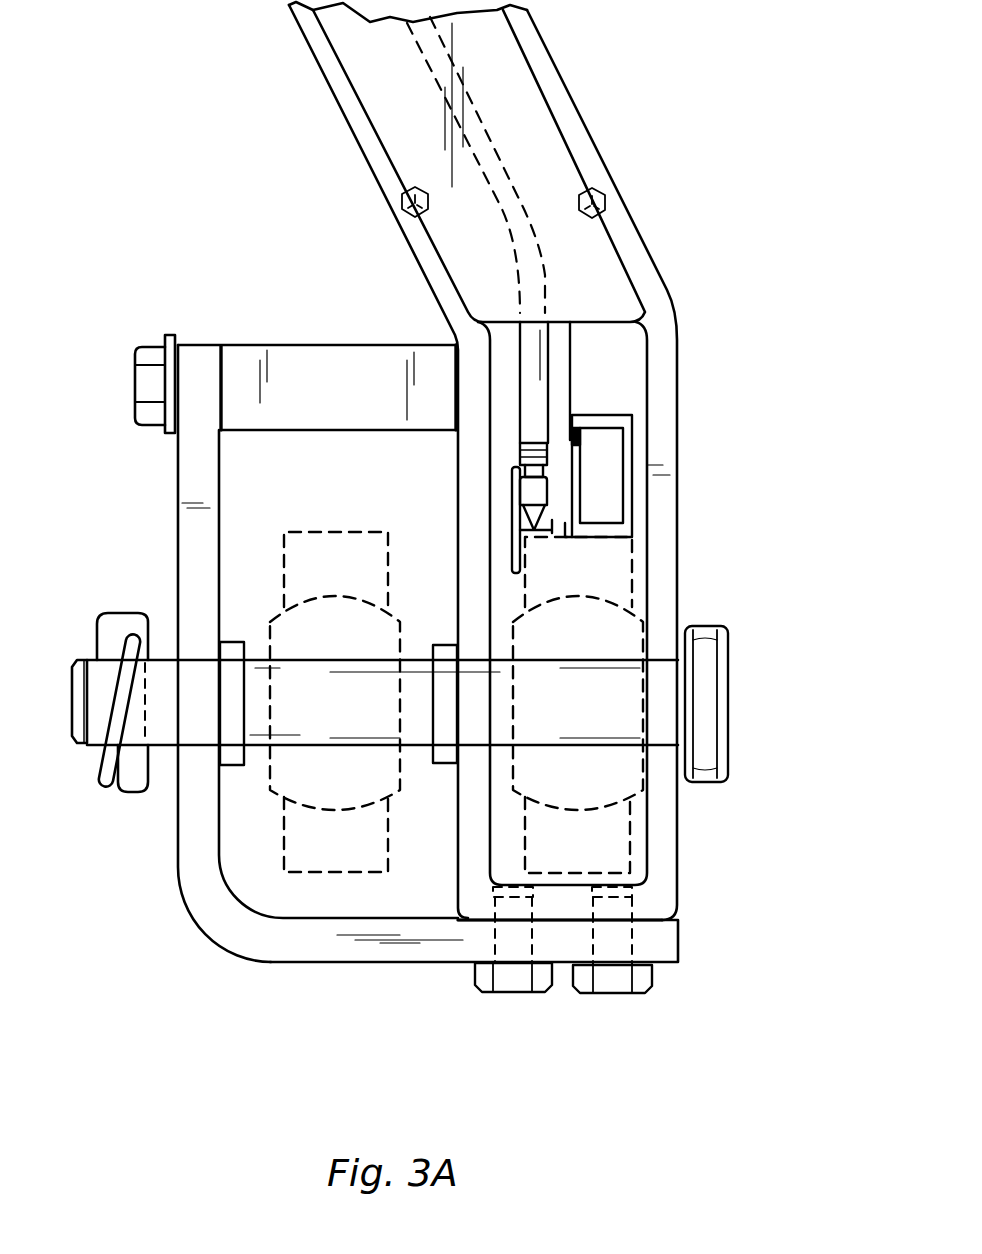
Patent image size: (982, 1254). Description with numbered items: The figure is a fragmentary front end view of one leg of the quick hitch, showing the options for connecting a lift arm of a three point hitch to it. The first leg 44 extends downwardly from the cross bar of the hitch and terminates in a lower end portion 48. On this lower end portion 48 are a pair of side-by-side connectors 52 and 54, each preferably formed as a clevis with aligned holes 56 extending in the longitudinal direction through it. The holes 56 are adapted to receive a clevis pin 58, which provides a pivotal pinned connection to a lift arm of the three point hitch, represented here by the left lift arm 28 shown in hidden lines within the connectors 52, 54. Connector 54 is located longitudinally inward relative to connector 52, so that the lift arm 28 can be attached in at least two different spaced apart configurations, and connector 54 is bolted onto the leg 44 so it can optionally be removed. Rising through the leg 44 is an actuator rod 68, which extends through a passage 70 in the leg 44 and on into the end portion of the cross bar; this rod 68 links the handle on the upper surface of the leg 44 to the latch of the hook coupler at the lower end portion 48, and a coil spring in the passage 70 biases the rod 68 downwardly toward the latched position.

The left lift arm 28 is at (292, 532).
The first leg 44 is at (674, 298).
The lower end portion 48 is at (678, 900).
The connector 52 is at (560, 925).
The connector 54 is at (210, 938).
The aligned holes 56 is at (207, 745).
The clevis pin 58 is at (717, 778).
The actuator rod 68 is at (548, 407).
The passage 70 is at (562, 375).